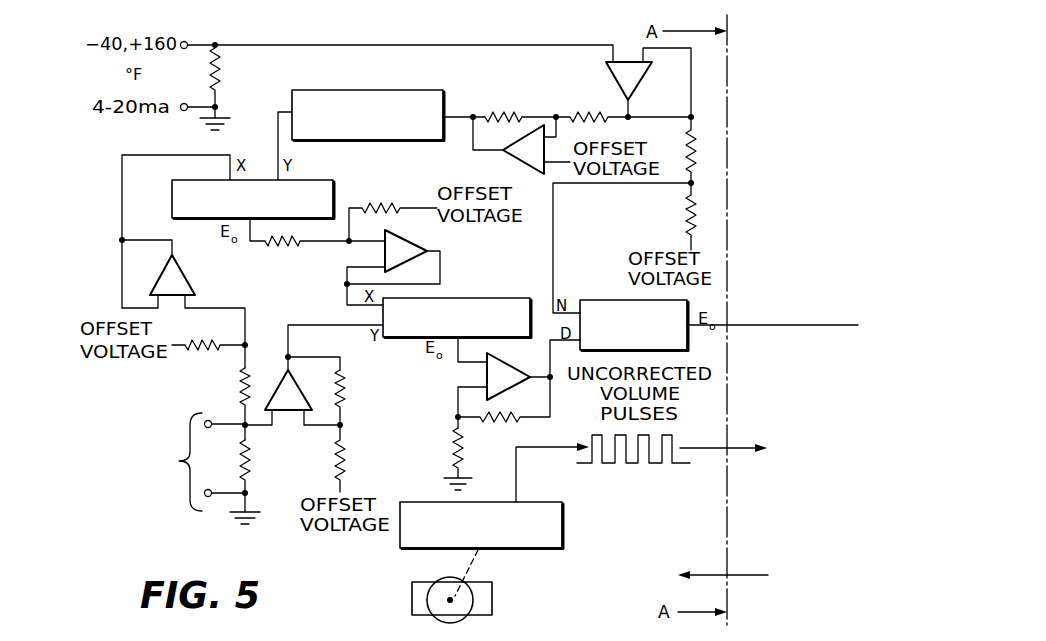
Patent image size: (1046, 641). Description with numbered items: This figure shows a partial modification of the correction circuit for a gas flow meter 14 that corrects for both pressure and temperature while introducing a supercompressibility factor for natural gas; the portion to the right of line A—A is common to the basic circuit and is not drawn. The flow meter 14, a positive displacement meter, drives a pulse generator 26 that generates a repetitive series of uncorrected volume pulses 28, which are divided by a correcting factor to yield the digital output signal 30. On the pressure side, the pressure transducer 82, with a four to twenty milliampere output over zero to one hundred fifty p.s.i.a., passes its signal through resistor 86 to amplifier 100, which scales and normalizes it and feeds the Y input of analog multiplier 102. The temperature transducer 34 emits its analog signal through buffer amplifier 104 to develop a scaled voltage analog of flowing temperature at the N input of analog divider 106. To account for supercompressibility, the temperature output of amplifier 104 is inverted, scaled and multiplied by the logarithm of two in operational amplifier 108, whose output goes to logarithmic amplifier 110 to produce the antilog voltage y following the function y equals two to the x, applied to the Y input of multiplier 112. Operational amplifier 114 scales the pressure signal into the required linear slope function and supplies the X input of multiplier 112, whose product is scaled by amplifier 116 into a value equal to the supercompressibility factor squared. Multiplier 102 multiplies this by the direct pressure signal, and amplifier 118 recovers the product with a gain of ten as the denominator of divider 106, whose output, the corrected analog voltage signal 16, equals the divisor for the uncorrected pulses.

The flow meter 14 is at (398, 582).
The analog voltage signal 16 is at (767, 326).
The pulse generator 26 is at (620, 512).
The pulses 28 is at (516, 463).
The digital output signal 30 is at (706, 572).
The temperature transducer 34 is at (198, 70).
The pressure transducer 82 is at (220, 478).
The resistor 86 is at (250, 475).
The amplifier 100 is at (285, 412).
The analog multiplier 102 is at (468, 297).
The buffer amplifier 104 is at (612, 69).
The analog divider 106 is at (597, 298).
The operational amplifier 108 is at (512, 153).
The logarithmic amplifier 110 is at (333, 90).
The multiplier 112 is at (332, 181).
The operational amplifier 114 is at (187, 278).
The amplifier 116 is at (412, 247).
The amplifier 118 is at (487, 378).